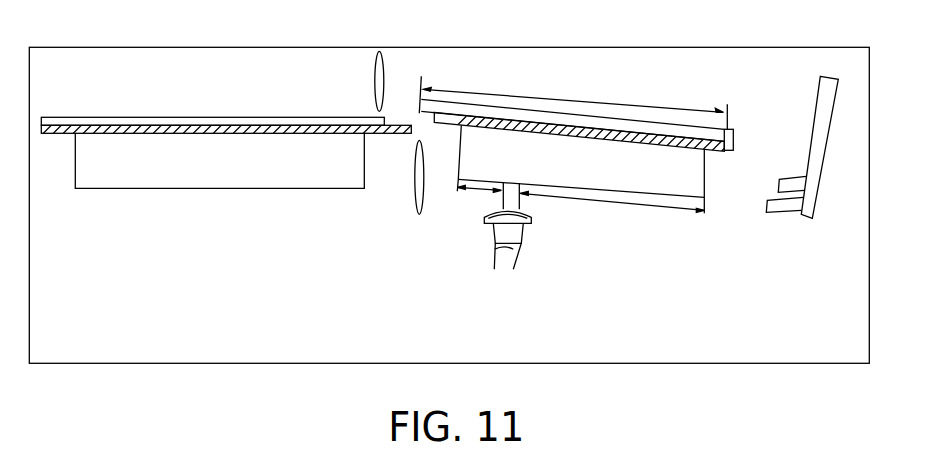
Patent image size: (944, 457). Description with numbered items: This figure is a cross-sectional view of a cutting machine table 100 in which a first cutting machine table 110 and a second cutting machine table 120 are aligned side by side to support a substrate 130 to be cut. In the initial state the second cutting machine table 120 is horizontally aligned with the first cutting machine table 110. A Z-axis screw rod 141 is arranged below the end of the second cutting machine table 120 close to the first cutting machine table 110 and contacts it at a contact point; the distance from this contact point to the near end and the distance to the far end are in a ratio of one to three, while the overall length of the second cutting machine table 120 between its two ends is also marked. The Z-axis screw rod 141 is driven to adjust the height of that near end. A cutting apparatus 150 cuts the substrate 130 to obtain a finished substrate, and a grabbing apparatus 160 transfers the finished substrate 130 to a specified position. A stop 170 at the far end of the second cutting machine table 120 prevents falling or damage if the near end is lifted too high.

The cutting machine table 100 is at (323, 45).
The first cutting machine table 110 is at (307, 186).
The second cutting machine table 120 is at (695, 177).
The substrate 130 is at (192, 115).
The Z-axis screw rod 141 is at (510, 256).
The cutting apparatus 150 is at (417, 140).
The grabbing apparatus 160 is at (798, 212).
The stop 170 is at (731, 129).